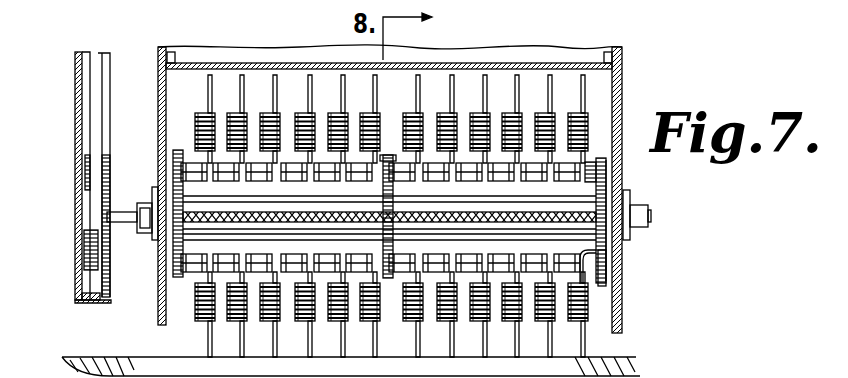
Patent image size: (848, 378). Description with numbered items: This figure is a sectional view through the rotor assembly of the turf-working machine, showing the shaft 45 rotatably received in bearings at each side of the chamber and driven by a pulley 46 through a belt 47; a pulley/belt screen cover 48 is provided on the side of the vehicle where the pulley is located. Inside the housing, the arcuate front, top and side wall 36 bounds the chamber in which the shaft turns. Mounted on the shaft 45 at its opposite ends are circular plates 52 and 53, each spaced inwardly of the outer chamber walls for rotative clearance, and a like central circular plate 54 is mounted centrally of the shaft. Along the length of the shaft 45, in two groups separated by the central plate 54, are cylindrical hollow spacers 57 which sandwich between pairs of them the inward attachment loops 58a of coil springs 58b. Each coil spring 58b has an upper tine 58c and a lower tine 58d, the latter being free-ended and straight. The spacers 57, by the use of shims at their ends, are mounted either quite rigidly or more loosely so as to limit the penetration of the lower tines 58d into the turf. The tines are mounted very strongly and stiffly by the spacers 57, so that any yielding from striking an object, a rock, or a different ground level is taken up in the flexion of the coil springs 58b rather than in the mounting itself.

The arcuate front, top and side wall 36 is at (560, 71).
The shaft 45 is at (126, 224).
The pulley 46 is at (109, 158).
The belt 47 is at (90, 106).
The pulley/belt screen cover 48 is at (75, 290).
The circular plate 52 is at (614, 181).
The circular plate 53 is at (165, 285).
The central circular plate 54 is at (197, 207).
The spacer 57 is at (573, 162).
The inward attachment loop 58a is at (600, 262).
The coil spring 58b is at (197, 120).
The upper tine 58c is at (607, 290).
The lower tine 58d is at (240, 80).